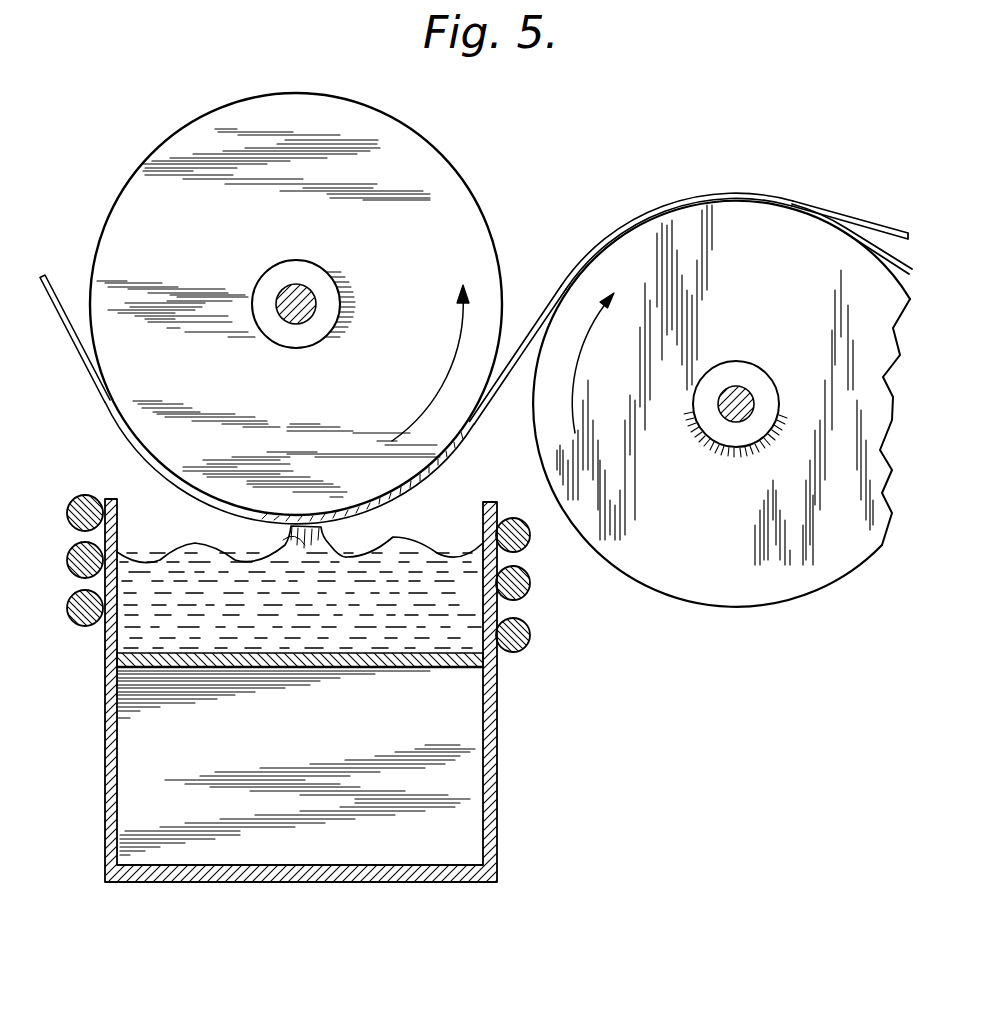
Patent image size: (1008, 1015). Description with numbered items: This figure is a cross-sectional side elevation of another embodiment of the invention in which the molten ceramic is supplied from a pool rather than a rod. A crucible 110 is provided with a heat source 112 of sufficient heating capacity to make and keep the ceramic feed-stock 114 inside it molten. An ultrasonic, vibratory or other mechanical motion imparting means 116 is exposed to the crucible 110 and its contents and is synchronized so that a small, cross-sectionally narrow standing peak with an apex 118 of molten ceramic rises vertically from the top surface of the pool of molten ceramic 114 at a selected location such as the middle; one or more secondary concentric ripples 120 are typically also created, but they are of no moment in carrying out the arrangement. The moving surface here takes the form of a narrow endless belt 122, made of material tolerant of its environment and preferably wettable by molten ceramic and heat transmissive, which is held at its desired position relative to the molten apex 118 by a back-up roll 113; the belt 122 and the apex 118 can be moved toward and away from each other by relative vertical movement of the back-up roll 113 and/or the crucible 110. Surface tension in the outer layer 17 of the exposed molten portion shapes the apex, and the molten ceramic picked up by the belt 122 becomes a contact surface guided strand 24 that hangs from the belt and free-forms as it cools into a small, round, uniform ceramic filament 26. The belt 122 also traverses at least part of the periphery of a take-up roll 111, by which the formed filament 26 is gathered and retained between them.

The crucible 110 is at (497, 845).
The take-up roll 111 is at (770, 610).
The heat source 112 is at (460, 773).
The back-up roll 113 is at (418, 162).
The ceramic feed-stock 114 is at (363, 613).
The mechanical motion imparting means 116 is at (527, 653).
The apex 118 is at (285, 533).
The secondary concentric ripples 120 is at (183, 542).
The endless belt 122 is at (62, 300).
The outer layer 17 is at (285, 522).
The contact surface guided strand 24 is at (343, 527).
The ceramic filament 26 is at (898, 256).